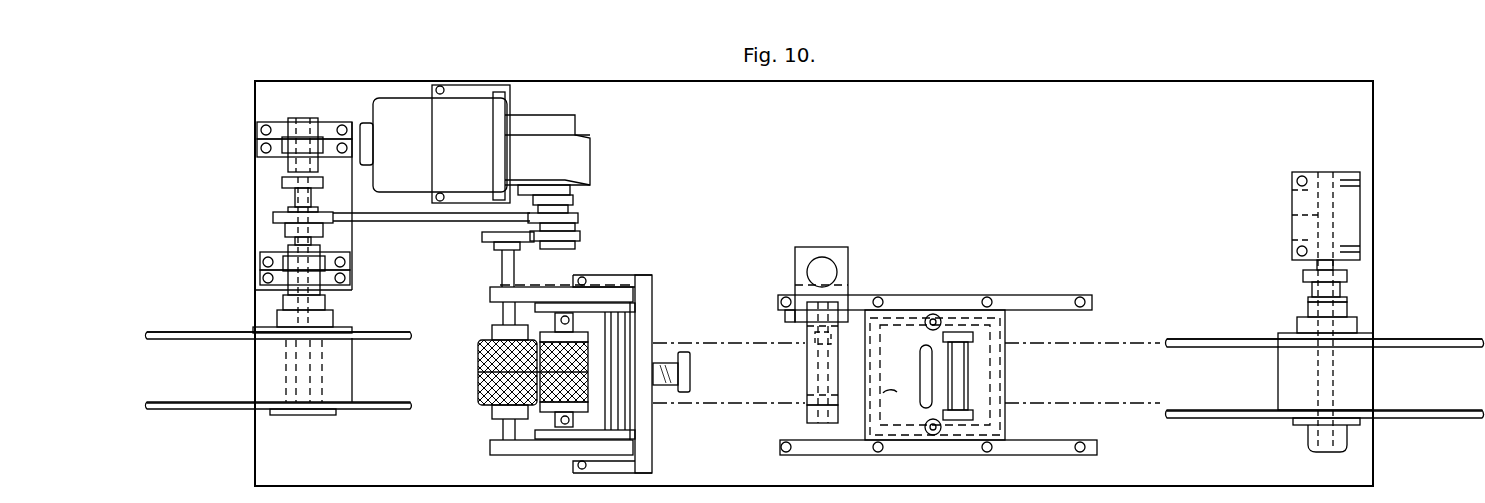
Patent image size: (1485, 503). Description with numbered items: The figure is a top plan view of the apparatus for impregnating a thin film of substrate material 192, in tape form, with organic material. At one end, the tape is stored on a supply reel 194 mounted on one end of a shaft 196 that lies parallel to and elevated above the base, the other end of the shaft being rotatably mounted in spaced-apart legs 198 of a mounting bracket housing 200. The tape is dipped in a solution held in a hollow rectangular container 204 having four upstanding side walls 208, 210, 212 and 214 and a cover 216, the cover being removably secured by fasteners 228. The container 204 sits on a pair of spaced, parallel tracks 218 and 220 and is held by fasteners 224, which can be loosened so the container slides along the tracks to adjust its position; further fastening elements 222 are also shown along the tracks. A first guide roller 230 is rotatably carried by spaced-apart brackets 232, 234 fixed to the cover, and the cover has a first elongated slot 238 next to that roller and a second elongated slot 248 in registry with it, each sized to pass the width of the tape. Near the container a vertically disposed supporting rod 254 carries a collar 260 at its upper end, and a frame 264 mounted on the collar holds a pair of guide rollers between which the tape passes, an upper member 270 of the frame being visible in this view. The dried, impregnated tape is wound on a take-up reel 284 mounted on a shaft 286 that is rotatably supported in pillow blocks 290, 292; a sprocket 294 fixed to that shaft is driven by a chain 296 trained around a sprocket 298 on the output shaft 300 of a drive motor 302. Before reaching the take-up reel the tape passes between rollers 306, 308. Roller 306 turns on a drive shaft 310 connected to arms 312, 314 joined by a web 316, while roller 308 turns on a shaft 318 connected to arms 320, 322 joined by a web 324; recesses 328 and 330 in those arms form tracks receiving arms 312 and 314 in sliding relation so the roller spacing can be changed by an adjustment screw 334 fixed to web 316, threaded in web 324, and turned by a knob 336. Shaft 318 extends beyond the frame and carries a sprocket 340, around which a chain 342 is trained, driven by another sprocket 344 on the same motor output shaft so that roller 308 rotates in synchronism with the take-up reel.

The substrate material 192 is at (520, 385).
The supply reel 194 is at (1440, 340).
The shaft 196 is at (1300, 218).
The legs 198 is at (1300, 190).
The mounting bracket housing 200 is at (1361, 218).
The container 204 is at (1006, 318).
The side wall 208 is at (902, 380).
The side wall 210 is at (905, 455).
The side wall 212 is at (1000, 393).
The side wall 214 is at (912, 318).
The cover 216 is at (898, 333).
The track 218 is at (1095, 448).
The track 220 is at (1040, 300).
The bolts 222 is at (860, 300).
The fasteners 224 is at (878, 297).
The fasteners 228 is at (938, 315).
The first guide roller 230 is at (968, 374).
The bracket 232 is at (975, 414).
The bracket 234 is at (975, 338).
The first elongated slot 238 is at (975, 355).
The second elongated slot 248 is at (907, 376).
The supporting rod 254 is at (820, 257).
The collar 260 is at (800, 247).
The frame 264 is at (801, 334).
The rod 270 is at (807, 380).
The take-up reel 284 is at (215, 409).
The shaft 286 is at (300, 360).
The pillow block 290 is at (281, 251).
The pillow block 292 is at (283, 133).
The sprocket 294 is at (283, 212).
The drive chain 296 is at (370, 226).
The sprocket 298 is at (572, 209).
The output shaft 300 is at (560, 196).
The drive motor 302 is at (450, 155).
The roller 306 is at (478, 356).
The roller 308 is at (490, 370).
The drive shaft 310 is at (568, 320).
The arm 312 is at (573, 435).
The arm 314 is at (635, 306).
The web 316 is at (628, 322).
The shaft 318 is at (502, 268).
The arm 320 is at (490, 455).
The arm 322 is at (490, 295).
The web 324 is at (650, 444).
The recess 328 is at (566, 286).
The recess 330 is at (550, 447).
The adjustment screw 334 is at (665, 380).
The knob 336 is at (690, 357).
The sprocket 340 is at (490, 252).
The drive chain 342 is at (574, 237).
The sprocket 344 is at (575, 252).